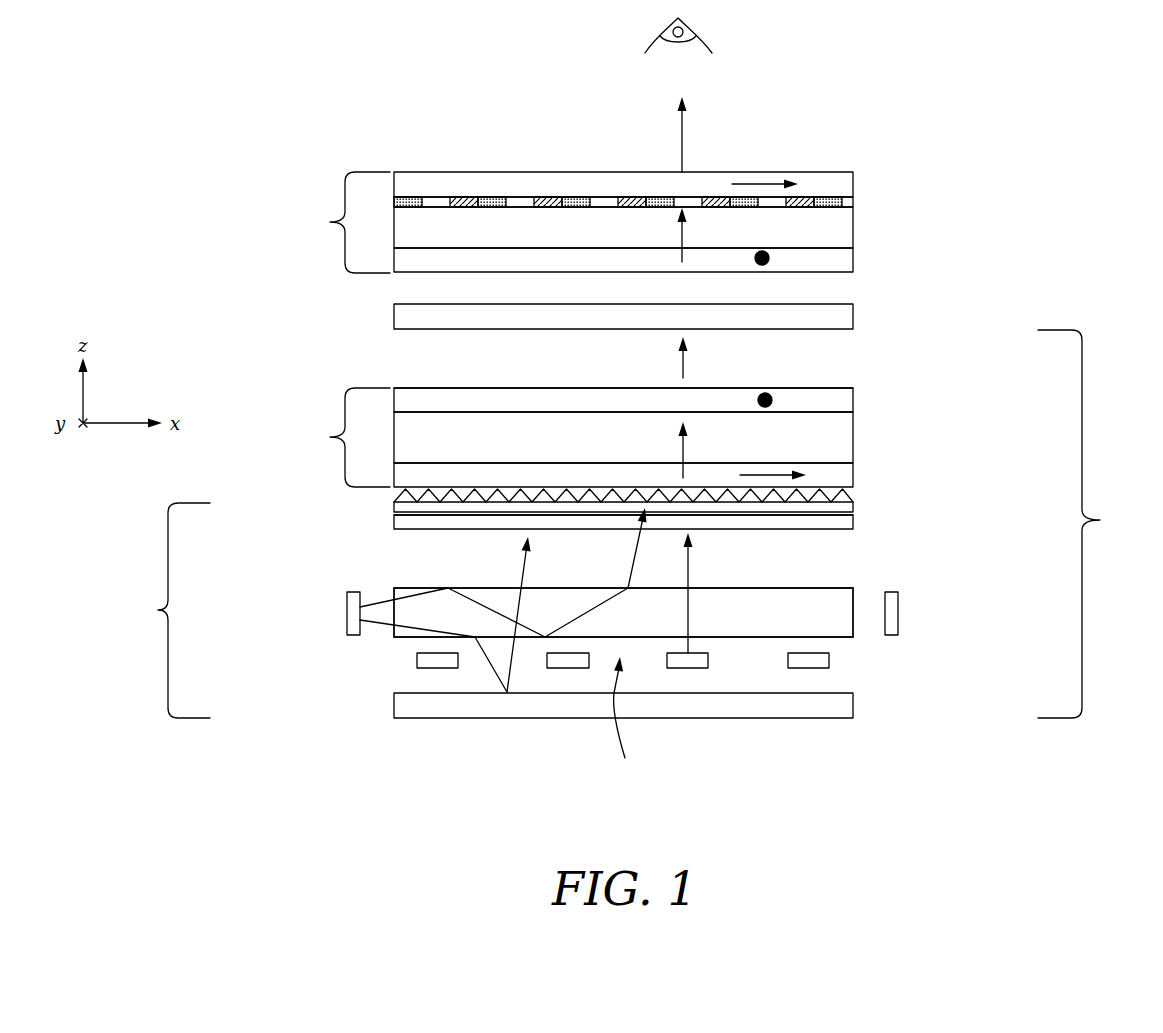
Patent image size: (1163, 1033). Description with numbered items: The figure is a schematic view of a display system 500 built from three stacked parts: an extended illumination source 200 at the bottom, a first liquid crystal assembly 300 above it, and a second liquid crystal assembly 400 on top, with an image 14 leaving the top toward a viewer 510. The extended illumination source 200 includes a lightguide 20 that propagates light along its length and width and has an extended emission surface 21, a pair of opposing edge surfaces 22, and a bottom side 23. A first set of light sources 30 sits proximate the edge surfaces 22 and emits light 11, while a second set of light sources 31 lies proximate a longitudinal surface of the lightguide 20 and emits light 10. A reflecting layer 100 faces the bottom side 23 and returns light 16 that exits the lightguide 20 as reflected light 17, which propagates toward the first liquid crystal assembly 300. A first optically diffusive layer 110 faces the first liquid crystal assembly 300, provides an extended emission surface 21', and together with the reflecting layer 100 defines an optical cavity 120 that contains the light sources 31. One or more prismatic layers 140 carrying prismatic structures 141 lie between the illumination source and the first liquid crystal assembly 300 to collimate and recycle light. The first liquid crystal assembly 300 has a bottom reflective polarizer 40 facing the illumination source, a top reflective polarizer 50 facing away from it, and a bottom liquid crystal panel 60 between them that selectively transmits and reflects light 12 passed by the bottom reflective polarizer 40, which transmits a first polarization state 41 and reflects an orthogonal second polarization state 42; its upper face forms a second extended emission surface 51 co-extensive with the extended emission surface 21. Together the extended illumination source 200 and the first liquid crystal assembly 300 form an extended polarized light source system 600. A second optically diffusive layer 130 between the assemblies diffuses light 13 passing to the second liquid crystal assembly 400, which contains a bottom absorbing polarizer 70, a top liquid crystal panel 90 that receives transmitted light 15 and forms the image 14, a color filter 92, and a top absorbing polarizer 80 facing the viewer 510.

The display system 500 is at (168, 148).
The viewer 510 is at (625, 24).
The second liquid crystal assembly 400 is at (339, 222).
The top absorbing polarizer 80 is at (846, 181).
The color filter 92 is at (846, 205).
The top liquid crystal panel 90 is at (846, 232).
The bottom absorbing polarizer 70 is at (846, 259).
The image 14 is at (682, 137).
The light transmitted by the first liquid crystal assembly 15 is at (685, 236).
The first polarization state 41 is at (766, 184).
The second polarization state 42 is at (764, 256).
The second optically diffusive layer 130 is at (394, 318).
The first liquid crystal assembly 300 is at (339, 437).
The second extended emission surface 51 is at (825, 388).
The top reflective polarizer 50 is at (838, 400).
The bottom liquid crystal panel 60 is at (825, 443).
The bottom reflective polarizer 40 is at (842, 474).
The light from the first liquid crystal assembly 13 is at (683, 350).
The light transmitted by the bottom reflective polarizer 12 is at (687, 447).
The prismatic structures 141 is at (843, 497).
The prismatic layer 140 is at (843, 508).
The first optically diffusive layer 110 is at (394, 520).
The extended emission surface 21' is at (623, 547).
The extended illumination source 200 is at (158, 610).
The lightguide 20 is at (847, 628).
The extended emission surface 21 is at (660, 567).
The edge surfaces 22 is at (395, 596).
The bottom side 23 is at (858, 662).
The first set of light sources 30 is at (347, 615).
The second set of light sources 31 is at (415, 656).
The reflecting layer 100 is at (803, 708).
The light exiting the lightguide 16 is at (495, 668).
The reflected light 17 is at (523, 555).
The light emitted by the first set of light sources 11 is at (637, 548).
The light emitted by the second set of light sources 10 is at (690, 560).
The optical cavity 120 is at (626, 724).
The extended polarized light source system 600 is at (1093, 524).